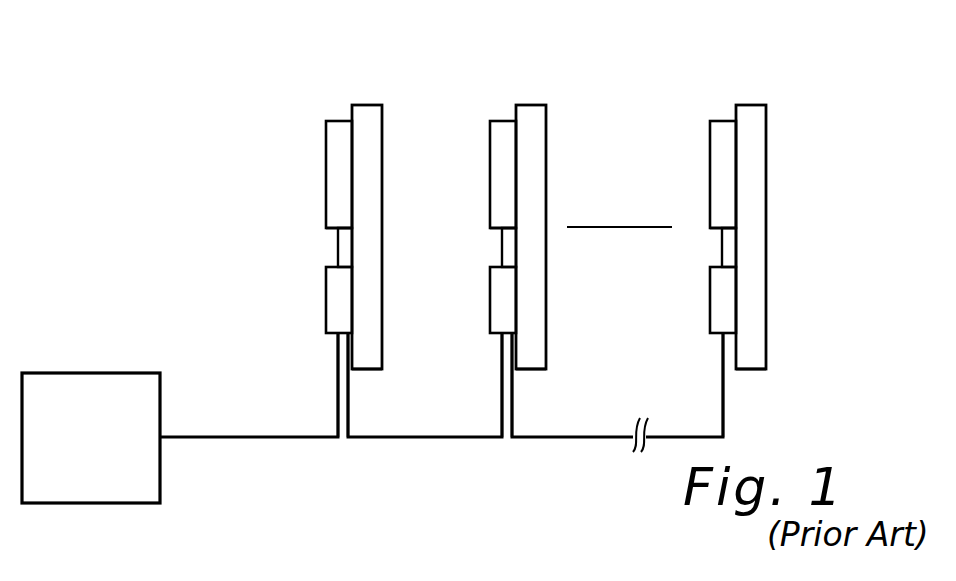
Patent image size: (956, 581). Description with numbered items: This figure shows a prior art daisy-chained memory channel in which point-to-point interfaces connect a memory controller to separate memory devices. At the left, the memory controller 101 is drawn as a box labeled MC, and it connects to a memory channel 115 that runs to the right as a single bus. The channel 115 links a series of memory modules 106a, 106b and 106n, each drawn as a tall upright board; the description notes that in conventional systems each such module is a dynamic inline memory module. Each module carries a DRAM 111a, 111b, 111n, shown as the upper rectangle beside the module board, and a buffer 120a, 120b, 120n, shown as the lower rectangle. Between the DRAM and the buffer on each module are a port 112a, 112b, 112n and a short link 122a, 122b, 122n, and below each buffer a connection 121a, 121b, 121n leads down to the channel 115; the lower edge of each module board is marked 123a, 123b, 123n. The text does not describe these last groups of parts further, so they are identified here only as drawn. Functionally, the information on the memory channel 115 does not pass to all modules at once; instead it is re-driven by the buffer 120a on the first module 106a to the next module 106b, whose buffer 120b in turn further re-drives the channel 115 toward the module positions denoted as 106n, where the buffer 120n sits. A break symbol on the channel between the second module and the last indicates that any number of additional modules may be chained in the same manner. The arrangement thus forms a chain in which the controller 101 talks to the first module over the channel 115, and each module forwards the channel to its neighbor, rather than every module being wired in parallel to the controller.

The memory controller (MC) 101 is at (90, 373).
The memory channel 115 is at (217, 437).
The memory module 106a is at (362, 88).
The memory module 106b is at (526, 88).
The memory module 106n is at (746, 88).
The DRAM 111a is at (338, 121).
The DRAM 111b is at (502, 121).
The DRAM 111n is at (722, 121).
The hub output port 112a is at (334, 233).
The hub output port 112b is at (498, 233).
The hub output port 112n is at (718, 233).
The link between hub and repeater 122a is at (338, 258).
The link between hub and repeater 122b is at (502, 258).
The link between hub and repeater 122n is at (722, 258).
The buffer 120a is at (326, 302).
The buffer 120b is at (490, 308).
The buffer 120n is at (710, 302).
The repeater connection to bus 121a is at (326, 338).
The repeater connection to bus 121b is at (492, 343).
The repeater connection to bus 121n is at (710, 338).
The memory module connector edge 123a is at (382, 348).
The memory module connector edge 123b is at (546, 348).
The memory module connector edge 123n is at (766, 348).